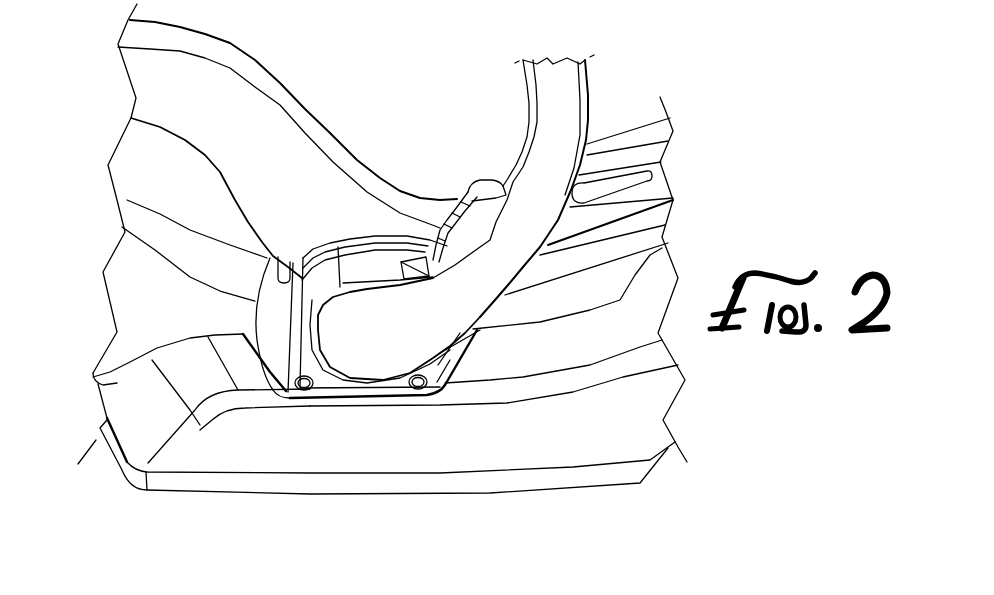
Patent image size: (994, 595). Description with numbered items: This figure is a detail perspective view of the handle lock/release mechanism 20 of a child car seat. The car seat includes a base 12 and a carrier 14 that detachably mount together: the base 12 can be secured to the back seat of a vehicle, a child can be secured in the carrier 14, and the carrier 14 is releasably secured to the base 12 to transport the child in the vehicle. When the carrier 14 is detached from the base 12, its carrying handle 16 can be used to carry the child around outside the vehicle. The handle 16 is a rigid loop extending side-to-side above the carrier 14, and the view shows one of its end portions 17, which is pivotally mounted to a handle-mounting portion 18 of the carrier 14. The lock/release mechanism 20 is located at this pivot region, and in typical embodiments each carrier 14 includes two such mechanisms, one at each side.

The base 12 is at (164, 496).
The carrier 14 is at (103, 310).
The carrying handle 16 is at (591, 85).
The end portions 17 is at (431, 331).
The handle-mounting portions 18 is at (327, 383).
The handle lock/release mechanism 20 is at (432, 183).